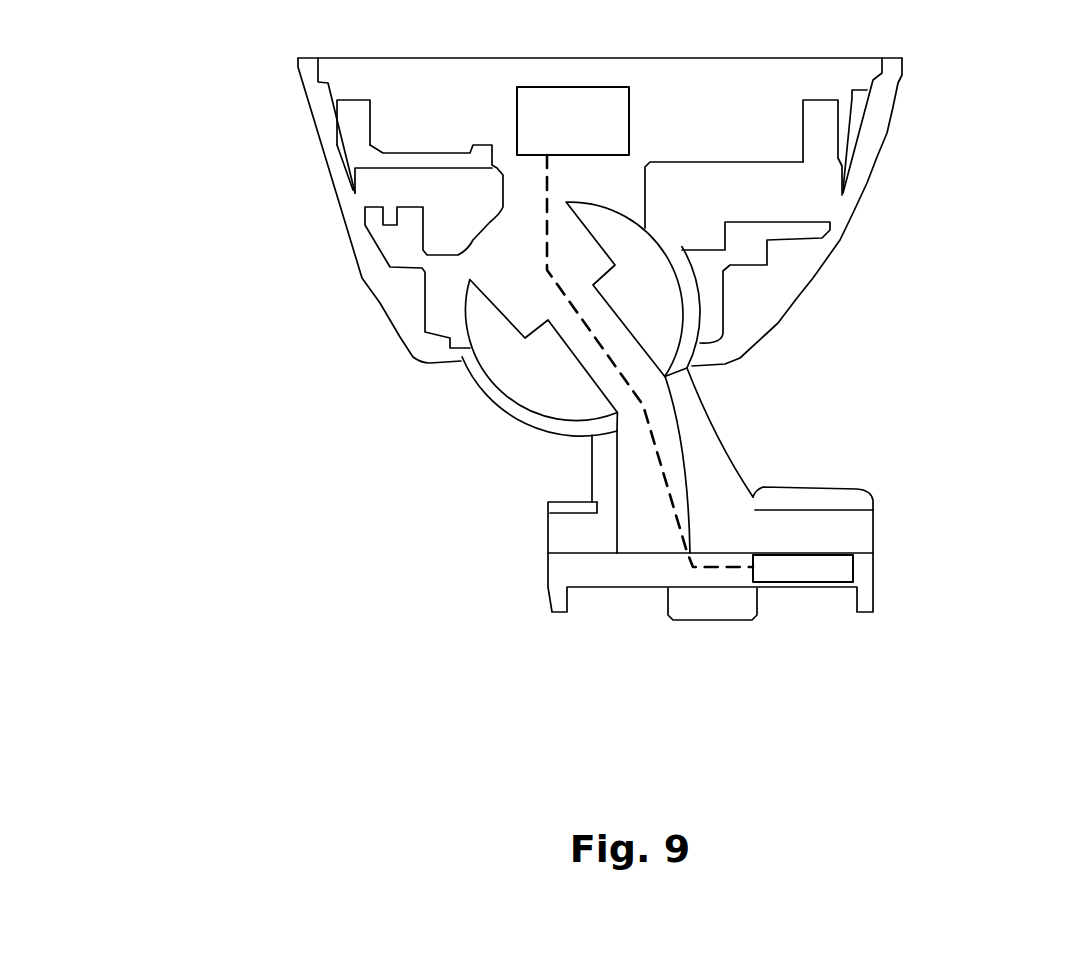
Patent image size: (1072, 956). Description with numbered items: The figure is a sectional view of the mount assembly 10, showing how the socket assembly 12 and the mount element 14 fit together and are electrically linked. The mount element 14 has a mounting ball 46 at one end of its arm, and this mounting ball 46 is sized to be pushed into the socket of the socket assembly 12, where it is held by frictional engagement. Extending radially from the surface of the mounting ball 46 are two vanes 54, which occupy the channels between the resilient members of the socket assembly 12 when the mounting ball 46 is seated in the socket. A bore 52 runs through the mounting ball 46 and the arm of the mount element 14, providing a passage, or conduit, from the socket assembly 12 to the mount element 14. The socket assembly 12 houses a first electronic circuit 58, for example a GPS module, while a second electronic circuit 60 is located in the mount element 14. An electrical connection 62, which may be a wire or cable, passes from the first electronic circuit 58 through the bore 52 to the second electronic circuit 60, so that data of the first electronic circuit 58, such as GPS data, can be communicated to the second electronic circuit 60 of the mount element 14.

The mount assembly 10 is at (543, 360).
The socket assembly 12 is at (878, 156).
The mount element 14 is at (560, 533).
The mounting ball 46 is at (533, 378).
The bore 52 is at (567, 345).
The vanes 54 is at (547, 427).
The first electronic circuit 58 is at (573, 121).
The second electronic circuit 60 is at (807, 567).
The electrical connection 62 is at (693, 567).